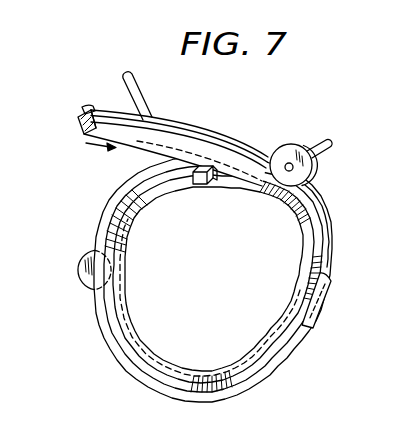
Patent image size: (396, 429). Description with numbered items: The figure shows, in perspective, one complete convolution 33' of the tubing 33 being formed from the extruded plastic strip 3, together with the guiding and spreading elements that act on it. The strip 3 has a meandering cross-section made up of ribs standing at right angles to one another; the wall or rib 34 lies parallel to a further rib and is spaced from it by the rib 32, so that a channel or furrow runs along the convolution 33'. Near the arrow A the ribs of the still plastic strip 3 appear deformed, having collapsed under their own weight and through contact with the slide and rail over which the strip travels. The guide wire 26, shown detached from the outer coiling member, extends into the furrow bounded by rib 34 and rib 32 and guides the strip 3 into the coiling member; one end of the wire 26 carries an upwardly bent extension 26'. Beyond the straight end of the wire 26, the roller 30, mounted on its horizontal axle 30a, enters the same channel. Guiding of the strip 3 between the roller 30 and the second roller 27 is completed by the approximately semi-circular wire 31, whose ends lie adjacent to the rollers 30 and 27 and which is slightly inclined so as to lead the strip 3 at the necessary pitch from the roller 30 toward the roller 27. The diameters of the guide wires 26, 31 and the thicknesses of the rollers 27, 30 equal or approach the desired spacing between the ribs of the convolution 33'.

The strip 3 is at (196, 124).
The guide wire 26 is at (178, 151).
The upwardly bent extension 26' is at (149, 96).
The roller 27 is at (81, 277).
The roller 30 is at (88, 108).
The horizontal axle 30a is at (327, 145).
The semi-circular wire 31 is at (80, 126).
The rib 32 is at (224, 184).
The tubing 33 is at (225, 235).
The convolution 33' is at (342, 238).
The rib 34 is at (204, 186).
The arrow A is at (91, 142).